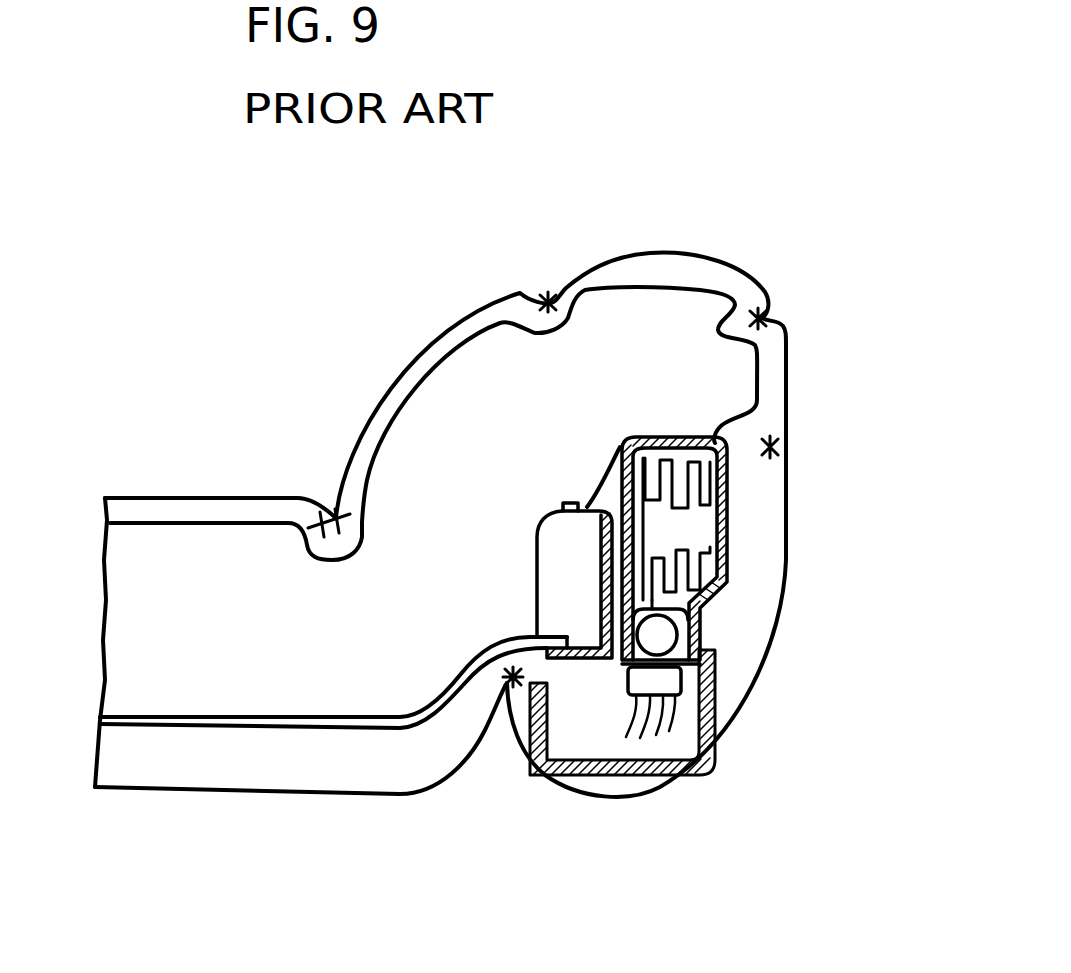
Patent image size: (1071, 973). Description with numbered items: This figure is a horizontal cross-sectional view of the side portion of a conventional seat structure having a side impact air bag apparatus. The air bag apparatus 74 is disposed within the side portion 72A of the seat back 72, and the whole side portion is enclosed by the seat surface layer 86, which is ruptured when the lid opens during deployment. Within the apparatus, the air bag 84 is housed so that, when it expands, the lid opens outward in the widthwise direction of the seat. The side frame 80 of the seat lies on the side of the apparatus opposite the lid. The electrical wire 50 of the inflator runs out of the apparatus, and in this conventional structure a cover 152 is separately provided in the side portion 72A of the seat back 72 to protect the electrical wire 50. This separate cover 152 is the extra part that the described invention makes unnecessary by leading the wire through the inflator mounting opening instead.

The seat back 72 is at (258, 435).
The side portion 72A is at (790, 372).
The seat surface layer 86 is at (786, 493).
The air bag apparatus 74 is at (727, 535).
The air bag 84 is at (716, 592).
The electrical wire 50 is at (677, 710).
The side frame 80 is at (592, 603).
The cover 152 is at (714, 702).